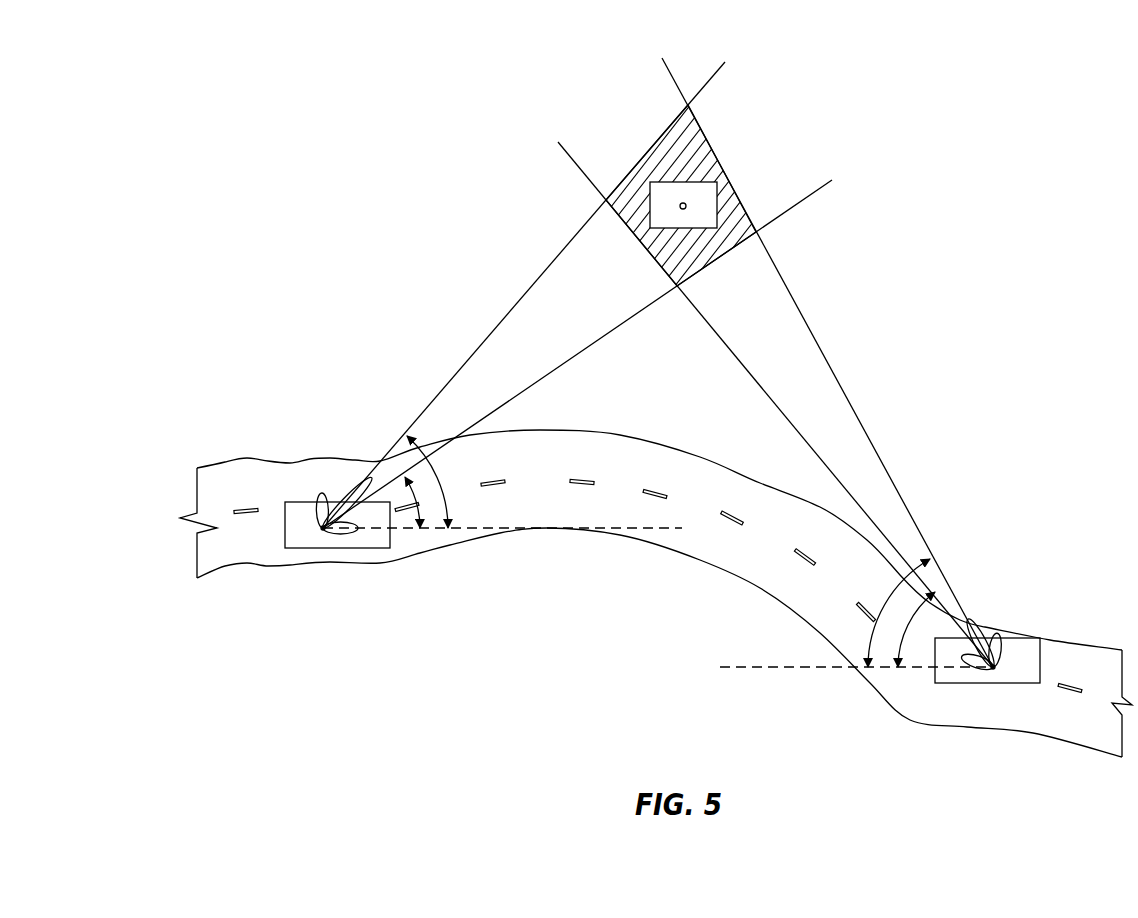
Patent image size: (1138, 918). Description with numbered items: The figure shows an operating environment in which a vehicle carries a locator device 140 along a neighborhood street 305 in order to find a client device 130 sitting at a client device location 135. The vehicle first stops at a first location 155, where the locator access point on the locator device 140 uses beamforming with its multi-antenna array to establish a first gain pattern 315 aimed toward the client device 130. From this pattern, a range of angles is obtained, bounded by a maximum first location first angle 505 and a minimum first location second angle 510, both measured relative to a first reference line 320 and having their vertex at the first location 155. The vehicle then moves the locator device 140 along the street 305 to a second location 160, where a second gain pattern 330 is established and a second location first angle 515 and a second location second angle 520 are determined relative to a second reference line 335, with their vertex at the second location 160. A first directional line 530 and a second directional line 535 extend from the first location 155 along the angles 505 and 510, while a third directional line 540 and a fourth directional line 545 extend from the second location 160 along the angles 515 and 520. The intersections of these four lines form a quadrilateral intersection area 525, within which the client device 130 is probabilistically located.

The client device 130 is at (718, 197).
The client device location 135 is at (682, 206).
The locator device 140 is at (285, 527).
The first location 155 is at (323, 528).
The second location 160 is at (993, 668).
The neighborhood street 305 is at (620, 450).
The first gain pattern 315 is at (355, 482).
The first reference line 320 is at (467, 532).
The second gain pattern 330 is at (982, 628).
The second reference line 335 is at (772, 668).
The first location first angle 505 is at (437, 462).
The first location second angle 510 is at (423, 495).
The second location first angle 515 is at (897, 590).
The second location second angle 520 is at (875, 623).
The intersection area 525 is at (697, 147).
The first directional line 530 is at (488, 333).
The second directional line 535 is at (595, 347).
The third directional line 540 is at (815, 333).
The fourth directional line 545 is at (763, 388).